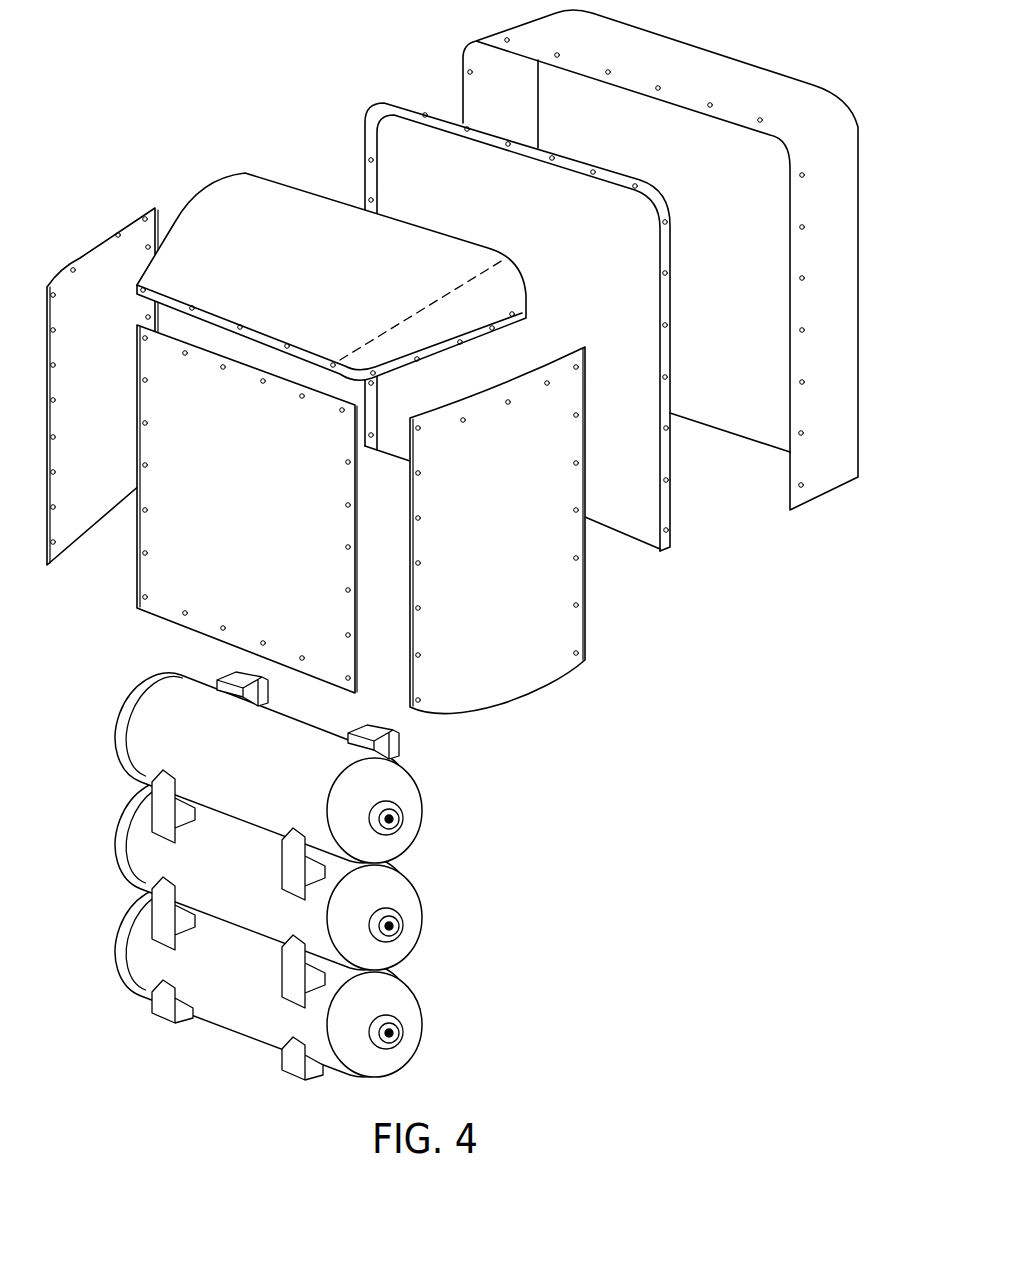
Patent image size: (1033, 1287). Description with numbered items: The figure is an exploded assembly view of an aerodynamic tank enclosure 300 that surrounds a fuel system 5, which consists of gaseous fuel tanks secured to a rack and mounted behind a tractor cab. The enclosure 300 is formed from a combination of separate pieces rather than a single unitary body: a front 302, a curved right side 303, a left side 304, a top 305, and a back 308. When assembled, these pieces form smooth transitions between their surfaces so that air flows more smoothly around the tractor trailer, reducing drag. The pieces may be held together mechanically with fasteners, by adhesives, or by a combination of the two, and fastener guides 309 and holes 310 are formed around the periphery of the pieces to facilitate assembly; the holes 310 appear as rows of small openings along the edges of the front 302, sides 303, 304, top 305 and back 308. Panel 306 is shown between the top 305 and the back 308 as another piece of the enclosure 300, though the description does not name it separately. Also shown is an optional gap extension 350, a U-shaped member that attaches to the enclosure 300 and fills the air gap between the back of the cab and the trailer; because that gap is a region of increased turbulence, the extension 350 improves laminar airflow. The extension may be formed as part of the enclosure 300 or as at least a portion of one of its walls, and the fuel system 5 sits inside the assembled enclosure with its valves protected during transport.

The aerodynamic tank enclosure 300 is at (303, 87).
The front surface 302 is at (268, 536).
The right side surface 303 is at (508, 673).
The left side surface 304 is at (105, 280).
The top surface 305 is at (325, 274).
The rear panel 306 is at (493, 300).
The back 308 is at (634, 265).
The fastener guides 309 is at (495, 326).
The holes 310 is at (53, 509).
The gap extension 350 is at (818, 354).
The fuel system 5 is at (462, 923).